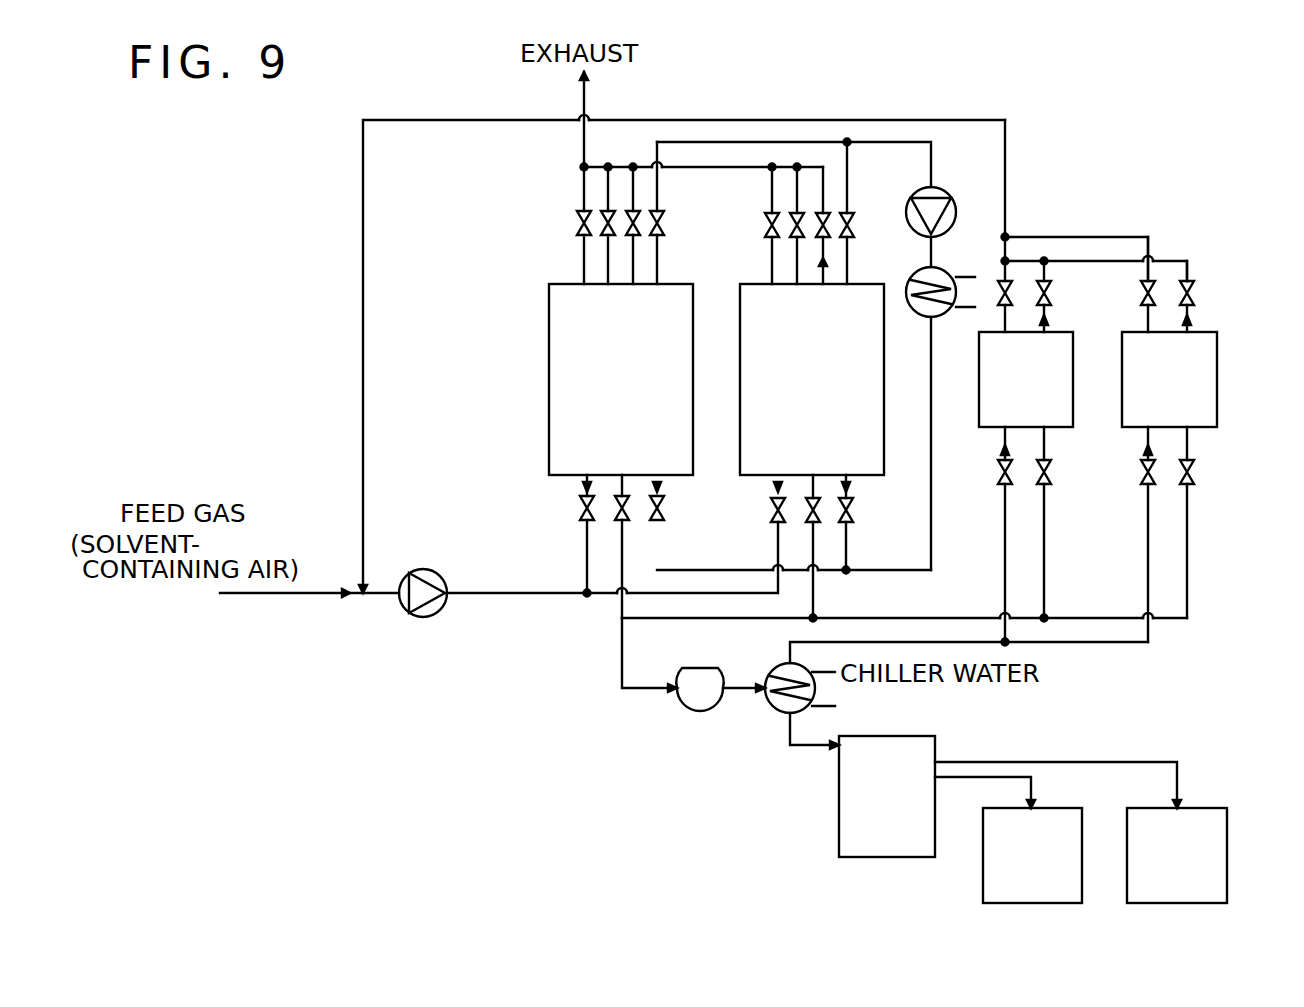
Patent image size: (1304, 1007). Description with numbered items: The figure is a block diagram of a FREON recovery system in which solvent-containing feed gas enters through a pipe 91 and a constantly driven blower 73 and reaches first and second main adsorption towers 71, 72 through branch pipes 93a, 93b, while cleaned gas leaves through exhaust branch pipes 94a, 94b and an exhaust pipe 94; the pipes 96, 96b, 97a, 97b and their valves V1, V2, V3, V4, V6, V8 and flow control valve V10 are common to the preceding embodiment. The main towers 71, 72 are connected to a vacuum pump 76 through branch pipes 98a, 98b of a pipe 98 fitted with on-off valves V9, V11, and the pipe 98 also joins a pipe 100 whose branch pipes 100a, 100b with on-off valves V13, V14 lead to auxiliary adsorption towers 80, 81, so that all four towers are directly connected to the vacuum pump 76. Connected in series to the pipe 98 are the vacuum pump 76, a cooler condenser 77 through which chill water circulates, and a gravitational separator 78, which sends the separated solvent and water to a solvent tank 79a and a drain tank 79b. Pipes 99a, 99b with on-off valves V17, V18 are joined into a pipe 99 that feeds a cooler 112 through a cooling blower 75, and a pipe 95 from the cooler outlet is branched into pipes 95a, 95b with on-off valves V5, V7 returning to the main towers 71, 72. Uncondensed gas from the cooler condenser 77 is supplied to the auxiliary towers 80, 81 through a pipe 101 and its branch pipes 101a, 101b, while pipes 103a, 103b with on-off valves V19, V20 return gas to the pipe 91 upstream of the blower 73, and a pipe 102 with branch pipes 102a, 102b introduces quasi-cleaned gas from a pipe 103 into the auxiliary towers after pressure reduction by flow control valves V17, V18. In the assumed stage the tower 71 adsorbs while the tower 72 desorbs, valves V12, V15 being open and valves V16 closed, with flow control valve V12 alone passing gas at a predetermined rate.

The first main adsorption tower 71 is at (549, 411).
The second main adsorption tower 72 is at (740, 413).
The blower 73 is at (423, 571).
The cooling blower 75 is at (948, 195).
The vacuum pump 76 is at (697, 712).
The cooler condenser 77 is at (780, 712).
The gravitational separator 78 is at (910, 860).
The solvent tank 79a is at (1048, 808).
The drain tank 79b is at (1198, 808).
The first auxiliary adsorption tower 80 is at (979, 378).
The second auxiliary adsorption tower 81 is at (1217, 370).
The pipe 91 is at (278, 594).
The branch pipe 93a is at (587, 555).
The branch pipe 93b is at (700, 596).
The exhaust pipe 94 is at (584, 142).
The branch pipe 94a is at (584, 185).
The branch pipe 94b is at (772, 172).
The pipe 95 is at (930, 440).
The branch pipe 95a is at (740, 570).
The branch pipe 95b is at (855, 496).
The pipe 96 is at (616, 150).
The branch pipe 96b is at (797, 165).
The branch pipe 97a is at (640, 165).
The branch pipe 97b is at (823, 165).
The pipe 98 is at (621, 676).
The branch pipe 98a is at (620, 606).
The branch pipe 98b is at (815, 600).
The pipe 99 is at (916, 142).
The pipe 99a is at (660, 176).
The pipe 99b is at (848, 172).
The pipe 100 is at (946, 617).
The branch pipe 100a is at (1046, 546).
The branch pipe 100b is at (1189, 552).
The pipe 101 is at (1072, 643).
The branch pipe 101a is at (1003, 552).
The branch pipe 101b is at (1147, 584).
The pipe 102 is at (1012, 237).
The branch pipe 102a is at (1046, 260).
The branch pipe 102b is at (1187, 260).
The pipe 103 is at (1006, 132).
The pipe 103a is at (1004, 262).
The pipe 103b is at (1148, 237).
The cooler 112 is at (915, 312).
The on-off valve V1 is at (580, 506).
The on-off valve V2 is at (577, 223).
The on-off valve V3 is at (771, 508).
The on-off valve V4 is at (765, 226).
The on-off valve V5 is at (664, 522).
The on-off valve V6 is at (601, 236).
The on-off valve V7 is at (853, 514).
The on-off valve V8 is at (790, 237).
The on-off valve V9 is at (629, 500).
The flow control valve V10 is at (640, 210).
The on-off valve V11 is at (820, 522).
The flow control valve V12 is at (830, 233).
The on-off valve V13 is at (1051, 470).
The on-off valve V14 is at (1194, 479).
The on-off valve V15 is at (998, 468).
The on-off valve V16 is at (1141, 478).
The valve V17 is at (664, 236).
The valve V18 is at (851, 220).
The on-off valve V19 is at (1000, 307).
The on-off valve V20 is at (1141, 292).